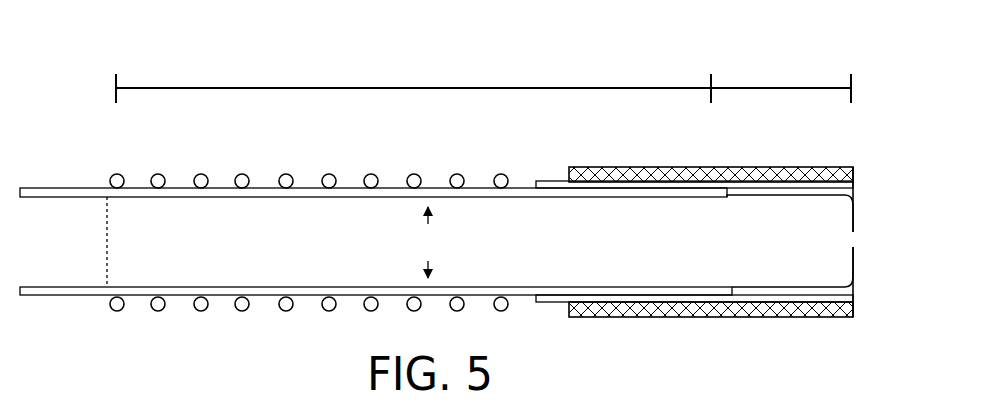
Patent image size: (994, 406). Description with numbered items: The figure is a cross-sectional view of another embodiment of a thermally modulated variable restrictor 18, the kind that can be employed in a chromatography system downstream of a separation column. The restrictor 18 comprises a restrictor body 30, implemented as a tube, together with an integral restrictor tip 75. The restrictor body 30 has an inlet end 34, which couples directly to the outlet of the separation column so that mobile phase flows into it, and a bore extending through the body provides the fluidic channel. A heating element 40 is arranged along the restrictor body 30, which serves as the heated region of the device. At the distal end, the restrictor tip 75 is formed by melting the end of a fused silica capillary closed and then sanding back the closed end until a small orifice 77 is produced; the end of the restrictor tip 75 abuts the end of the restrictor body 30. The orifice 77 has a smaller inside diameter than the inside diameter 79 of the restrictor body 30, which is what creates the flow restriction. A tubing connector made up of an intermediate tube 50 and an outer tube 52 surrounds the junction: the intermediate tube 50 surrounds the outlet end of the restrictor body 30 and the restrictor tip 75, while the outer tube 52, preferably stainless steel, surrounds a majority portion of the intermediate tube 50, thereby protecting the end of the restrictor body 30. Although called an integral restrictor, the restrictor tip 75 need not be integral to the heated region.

The thermally modulated variable restrictor 18 is at (62, 71).
The restrictor body 30 is at (276, 81).
The integral restrictor tip 75 is at (793, 88).
The heating element 40 is at (200, 174).
The inlet end 34 is at (107, 247).
The inside diameter of the restrictor body 79 is at (427, 242).
The intermediate tube 50 is at (548, 181).
The outer tube 52 is at (822, 158).
The orifice 77 is at (857, 240).